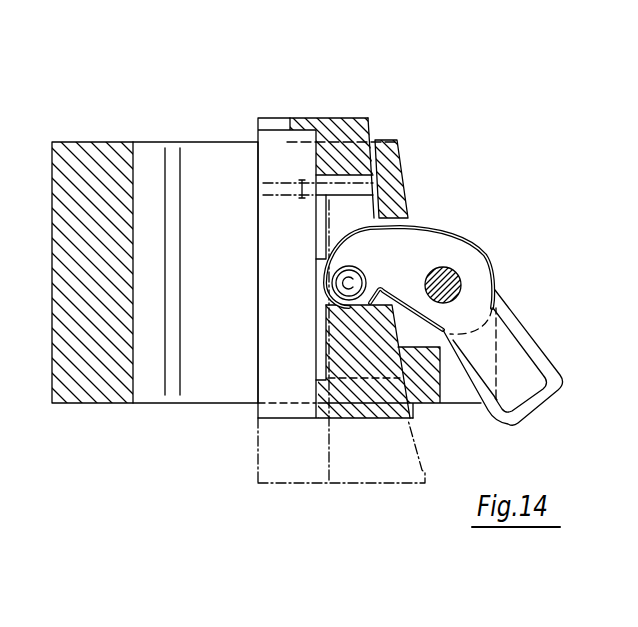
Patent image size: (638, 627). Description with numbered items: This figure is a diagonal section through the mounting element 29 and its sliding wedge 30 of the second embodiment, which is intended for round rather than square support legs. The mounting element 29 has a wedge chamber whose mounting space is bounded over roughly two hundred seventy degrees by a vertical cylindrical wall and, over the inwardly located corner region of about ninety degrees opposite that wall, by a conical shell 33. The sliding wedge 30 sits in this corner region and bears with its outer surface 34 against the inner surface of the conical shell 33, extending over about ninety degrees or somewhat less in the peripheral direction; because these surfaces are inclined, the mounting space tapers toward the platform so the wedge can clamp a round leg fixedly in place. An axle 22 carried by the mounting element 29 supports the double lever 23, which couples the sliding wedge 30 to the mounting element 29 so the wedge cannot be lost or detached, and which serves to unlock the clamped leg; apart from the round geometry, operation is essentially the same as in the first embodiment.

The axle 22 is at (441, 267).
The double lever 23 is at (472, 278).
The mounting element 29 is at (113, 142).
The sliding wedge 30 is at (350, 128).
The conical shell 33 is at (383, 172).
The outer surface 34 is at (375, 121).